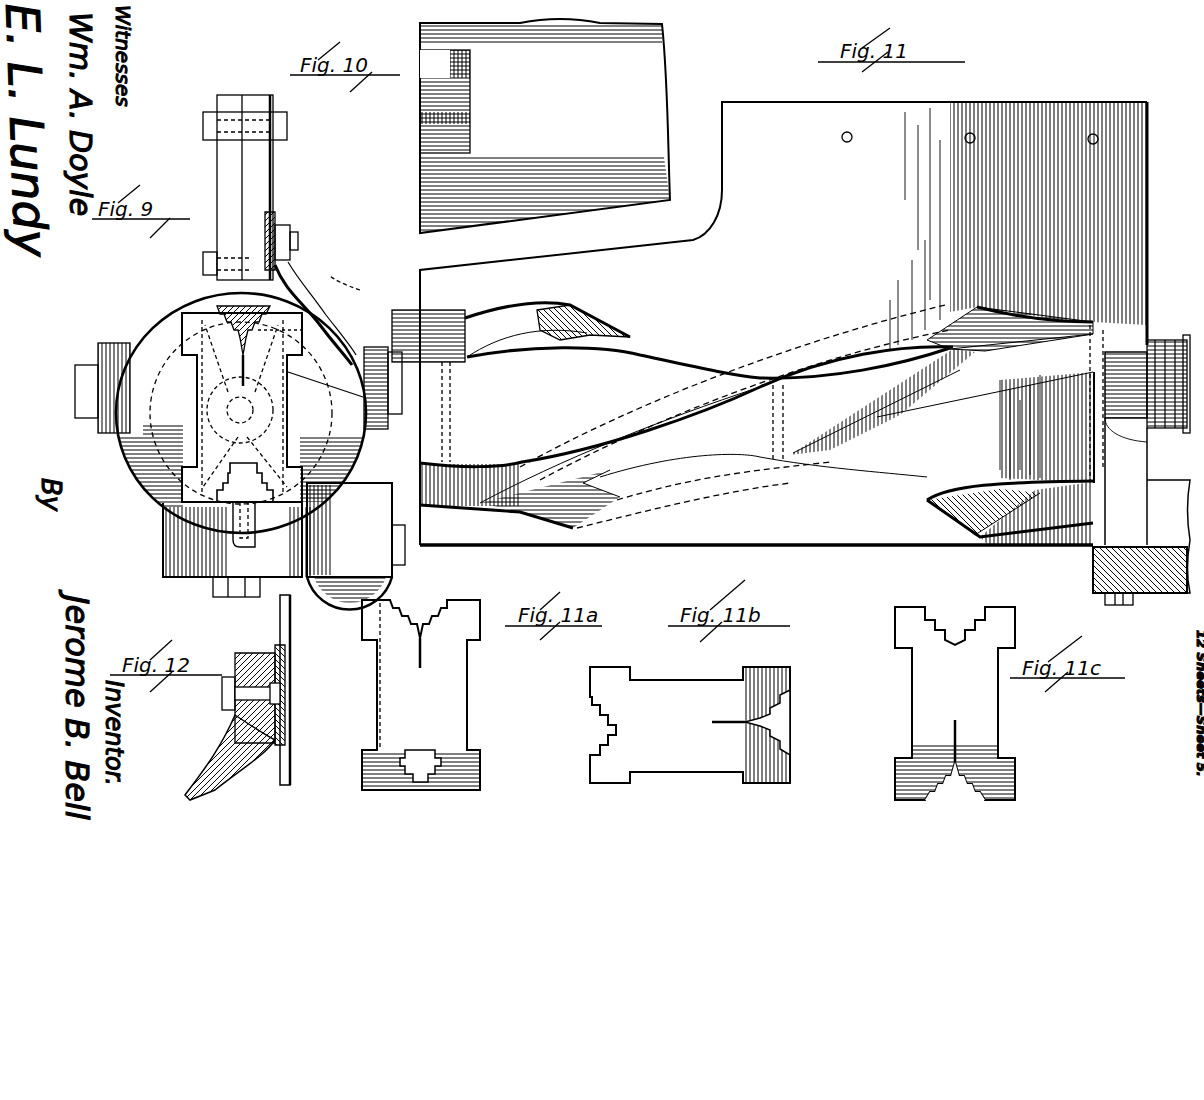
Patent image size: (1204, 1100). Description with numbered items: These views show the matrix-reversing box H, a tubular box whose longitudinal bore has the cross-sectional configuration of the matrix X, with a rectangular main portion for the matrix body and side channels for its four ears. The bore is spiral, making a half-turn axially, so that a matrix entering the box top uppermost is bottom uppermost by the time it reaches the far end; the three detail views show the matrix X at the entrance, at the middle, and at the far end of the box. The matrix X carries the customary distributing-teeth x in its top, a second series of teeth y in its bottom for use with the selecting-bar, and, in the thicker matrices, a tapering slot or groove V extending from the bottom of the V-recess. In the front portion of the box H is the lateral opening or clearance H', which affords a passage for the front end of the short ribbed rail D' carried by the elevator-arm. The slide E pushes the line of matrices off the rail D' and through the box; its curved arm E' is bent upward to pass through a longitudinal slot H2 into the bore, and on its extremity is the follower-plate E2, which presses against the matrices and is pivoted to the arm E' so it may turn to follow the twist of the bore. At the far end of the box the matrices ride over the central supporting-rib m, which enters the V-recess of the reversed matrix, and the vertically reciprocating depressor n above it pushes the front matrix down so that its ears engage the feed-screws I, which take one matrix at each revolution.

In FIG. 9, the reversing-box H is at (242, 407).
In FIG. 10, the reversing-box H is at (545, 126).
In FIG. 11, the reversing-box H is at (783, 323).
In FIG. 9, the lateral opening or clearance H' is at (325, 369).
In FIG. 10, the lateral opening or clearance H' is at (467, 101).
In FIG. 9, the longitudinal slot H2 is at (210, 530).
In FIG. 9, the short fixed horizontal ribbed rail D' is at (229, 203).
In FIG. 11, the short fixed horizontal ribbed rail D' is at (430, 367).
In FIG. 9, the slide E is at (298, 241).
In FIG. 9, the curved arm E' is at (317, 313).
In FIG. 12, the curved arm E' is at (223, 756).
In FIG. 9, the follower-plate E2 is at (155, 399).
In FIG. 12, the follower-plate E2 is at (288, 716).
In FIG. 9, the feed-screws I is at (128, 348).
In FIG. 11, the feed-screws I is at (1150, 345).
In FIG. 9, the matrix X is at (252, 426).
In FIG. 11a, the matrix X is at (421, 695).
In FIG. 11b, the matrix X is at (690, 725).
In FIG. 11c, the matrix X is at (955, 703).
In FIG. 9, the slot or groove V is at (247, 380).
In FIG. 11a, the slot or groove V is at (425, 660).
In FIG. 11b, the slot or groove V is at (720, 718).
In FIG. 11c, the slot or groove V is at (958, 728).
In FIG. 11a, the distributing-teeth x is at (400, 612).
In FIG. 11b, the distributing-teeth x is at (790, 712).
In FIG. 11c, the distributing-teeth x is at (948, 788).
In FIG. 9, the teeth y is at (160, 498).
In FIG. 11a, the teeth y is at (402, 783).
In FIG. 11b, the teeth y is at (606, 712).
In FIG. 11c, the teeth y is at (940, 618).
In FIG. 11, the central supporting-rib m is at (1145, 526).
In FIG. 11, the depressor n is at (1141, 551).